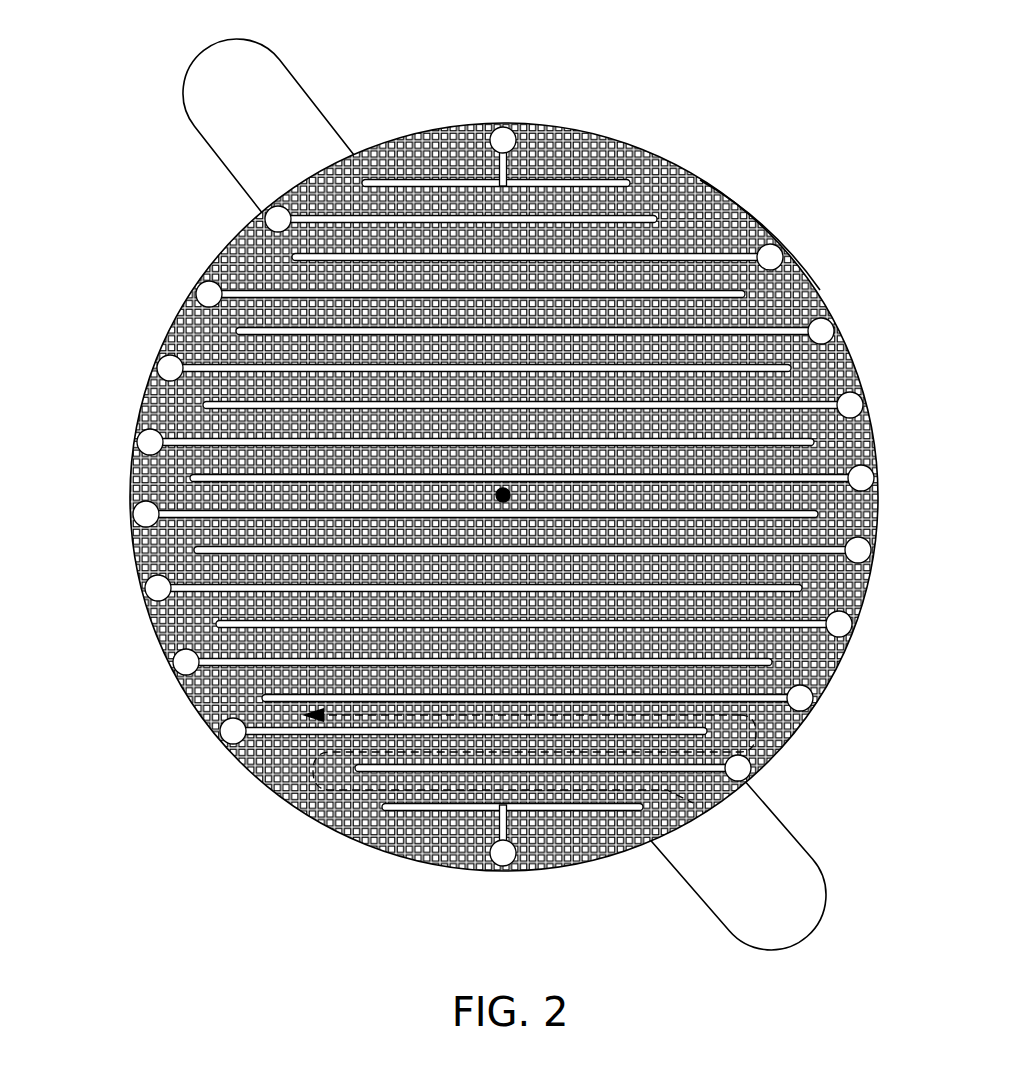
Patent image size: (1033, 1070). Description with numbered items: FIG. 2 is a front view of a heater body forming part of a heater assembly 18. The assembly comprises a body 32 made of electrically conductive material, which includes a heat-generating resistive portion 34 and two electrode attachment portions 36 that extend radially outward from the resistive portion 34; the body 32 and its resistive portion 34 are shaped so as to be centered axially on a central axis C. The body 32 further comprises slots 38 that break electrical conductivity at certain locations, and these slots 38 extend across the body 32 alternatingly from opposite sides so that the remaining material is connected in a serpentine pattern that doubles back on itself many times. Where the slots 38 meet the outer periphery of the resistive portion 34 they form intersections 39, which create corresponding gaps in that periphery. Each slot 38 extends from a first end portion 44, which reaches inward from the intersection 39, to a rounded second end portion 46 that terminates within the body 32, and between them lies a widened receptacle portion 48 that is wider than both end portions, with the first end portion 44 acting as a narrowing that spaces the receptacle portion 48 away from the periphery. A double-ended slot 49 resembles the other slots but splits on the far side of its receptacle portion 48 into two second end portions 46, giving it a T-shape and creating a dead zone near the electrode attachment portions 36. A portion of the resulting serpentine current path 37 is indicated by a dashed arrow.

The heater assembly 18 is at (459, 488).
The body 32 is at (857, 372).
The resistive portion 34 is at (782, 201).
The electrode attachment portions 36 is at (276, 76).
The serpentine path 37 is at (360, 790).
The slots 38 is at (185, 447).
The intersections 39 is at (806, 247).
The first end portion 44 is at (890, 552).
The second end portion 46 is at (345, 183).
The receptacle portion 48 is at (507, 127).
The double-ended slot 49 is at (455, 180).
The central axis C is at (503, 495).